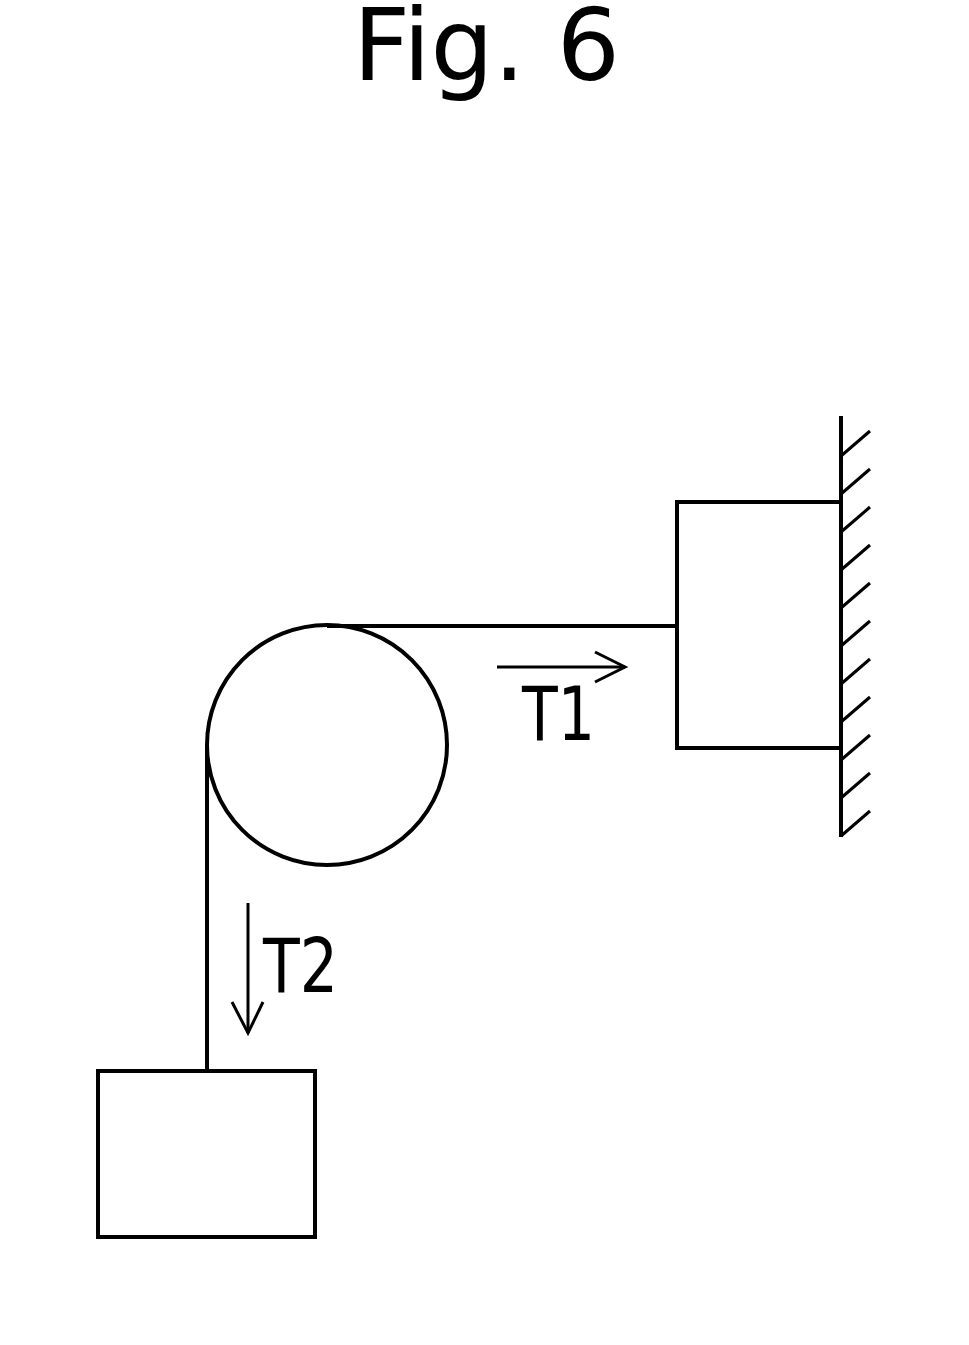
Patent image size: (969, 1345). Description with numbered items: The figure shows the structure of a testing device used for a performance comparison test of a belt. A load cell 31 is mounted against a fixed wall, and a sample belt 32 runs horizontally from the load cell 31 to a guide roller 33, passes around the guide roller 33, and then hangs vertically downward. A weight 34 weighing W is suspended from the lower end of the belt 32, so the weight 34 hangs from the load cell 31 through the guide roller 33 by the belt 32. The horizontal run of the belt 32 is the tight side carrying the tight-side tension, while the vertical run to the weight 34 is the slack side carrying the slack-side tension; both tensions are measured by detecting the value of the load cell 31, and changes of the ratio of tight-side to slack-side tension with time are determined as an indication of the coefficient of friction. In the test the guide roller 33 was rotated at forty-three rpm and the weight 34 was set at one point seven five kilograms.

The load cell 31 is at (755, 734).
The sample belt 32 is at (492, 625).
The guide roller 33 is at (407, 805).
The weight 34 is at (298, 1155).